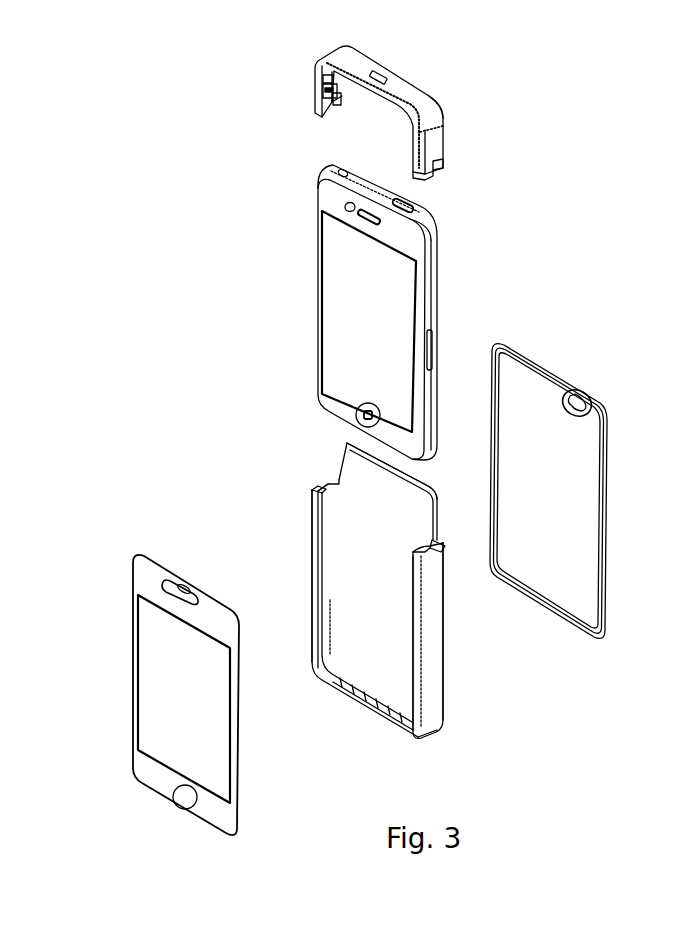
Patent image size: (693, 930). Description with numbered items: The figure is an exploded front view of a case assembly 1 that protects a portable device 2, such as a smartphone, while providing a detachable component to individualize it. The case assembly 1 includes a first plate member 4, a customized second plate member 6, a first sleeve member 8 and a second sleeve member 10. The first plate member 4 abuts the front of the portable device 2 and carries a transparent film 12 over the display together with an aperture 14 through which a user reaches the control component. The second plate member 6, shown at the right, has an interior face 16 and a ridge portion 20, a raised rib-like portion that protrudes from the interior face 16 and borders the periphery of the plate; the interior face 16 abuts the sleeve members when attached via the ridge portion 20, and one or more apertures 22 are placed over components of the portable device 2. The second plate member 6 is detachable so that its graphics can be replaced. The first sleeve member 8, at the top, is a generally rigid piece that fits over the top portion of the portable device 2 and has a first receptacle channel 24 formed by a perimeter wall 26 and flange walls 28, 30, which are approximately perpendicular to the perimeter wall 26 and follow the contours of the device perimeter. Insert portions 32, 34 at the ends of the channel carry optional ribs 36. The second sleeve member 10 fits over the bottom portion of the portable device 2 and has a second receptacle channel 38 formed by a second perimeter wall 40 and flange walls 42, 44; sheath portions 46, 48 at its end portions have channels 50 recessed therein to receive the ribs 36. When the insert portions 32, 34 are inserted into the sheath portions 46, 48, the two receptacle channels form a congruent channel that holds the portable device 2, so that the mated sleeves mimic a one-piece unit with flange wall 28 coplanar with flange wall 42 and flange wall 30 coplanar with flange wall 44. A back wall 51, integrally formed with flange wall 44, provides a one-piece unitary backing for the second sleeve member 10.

The case assembly 1 is at (471, 73).
The portable device 2 is at (437, 325).
The first plate member 4 is at (129, 566).
The second plate member 6 is at (611, 477).
The first sleeve member 8 is at (401, 66).
The second sleeve member 10 is at (406, 744).
The transparent film 12 is at (190, 700).
The aperture 14 is at (184, 797).
The interior face 16 is at (587, 512).
The ridge portion 20 is at (599, 566).
The apertures 22 is at (584, 398).
The first receptacle channel 24 is at (333, 89).
The perimeter wall 26 is at (428, 110).
The flange wall 28 is at (327, 80).
The flange wall 30 is at (332, 101).
The insert portion 32 is at (438, 160).
The insert portion 34 is at (335, 107).
The ribs 36 is at (433, 174).
The second receptacle channel 38 is at (326, 643).
The second perimeter wall 40 is at (432, 702).
The flange wall 42 is at (417, 664).
The flange wall 44 is at (441, 540).
The sheath portion 46 is at (312, 491).
The sheath portion 48 is at (437, 551).
The channels 50 is at (320, 488).
The back wall 51 is at (397, 530).